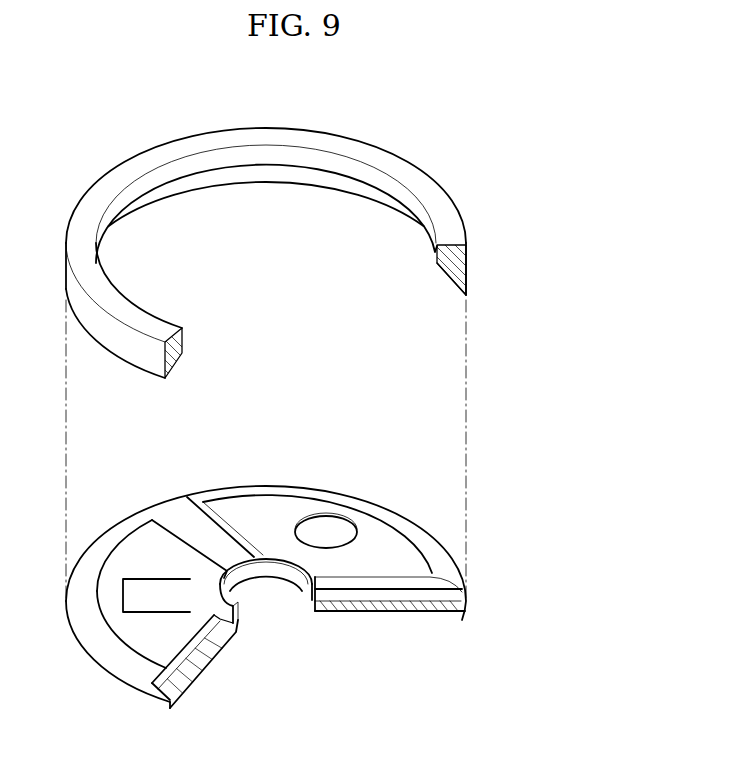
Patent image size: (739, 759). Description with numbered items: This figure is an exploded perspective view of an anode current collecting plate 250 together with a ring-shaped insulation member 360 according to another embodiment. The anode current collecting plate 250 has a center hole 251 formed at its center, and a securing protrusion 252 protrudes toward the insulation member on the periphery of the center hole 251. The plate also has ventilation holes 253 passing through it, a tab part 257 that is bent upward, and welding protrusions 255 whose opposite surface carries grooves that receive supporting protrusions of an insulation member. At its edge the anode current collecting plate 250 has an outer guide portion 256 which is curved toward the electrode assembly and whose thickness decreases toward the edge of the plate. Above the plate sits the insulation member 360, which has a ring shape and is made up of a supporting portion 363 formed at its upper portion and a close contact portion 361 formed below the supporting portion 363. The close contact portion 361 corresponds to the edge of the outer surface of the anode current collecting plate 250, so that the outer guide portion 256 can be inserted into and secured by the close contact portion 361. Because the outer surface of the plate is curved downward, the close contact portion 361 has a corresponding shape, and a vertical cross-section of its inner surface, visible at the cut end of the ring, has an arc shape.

The insulation member 360 is at (454, 193).
The close contact portion 361 is at (448, 279).
The supporting portion 363 is at (437, 250).
The anode current collecting plate 250 is at (447, 552).
The center hole 251 is at (275, 592).
The securing protrusion 252 is at (238, 572).
The ventilation holes 253 is at (333, 511).
The welding protrusions 255 is at (395, 612).
The outer guide portion 256 is at (466, 597).
The tab part 257 is at (148, 580).